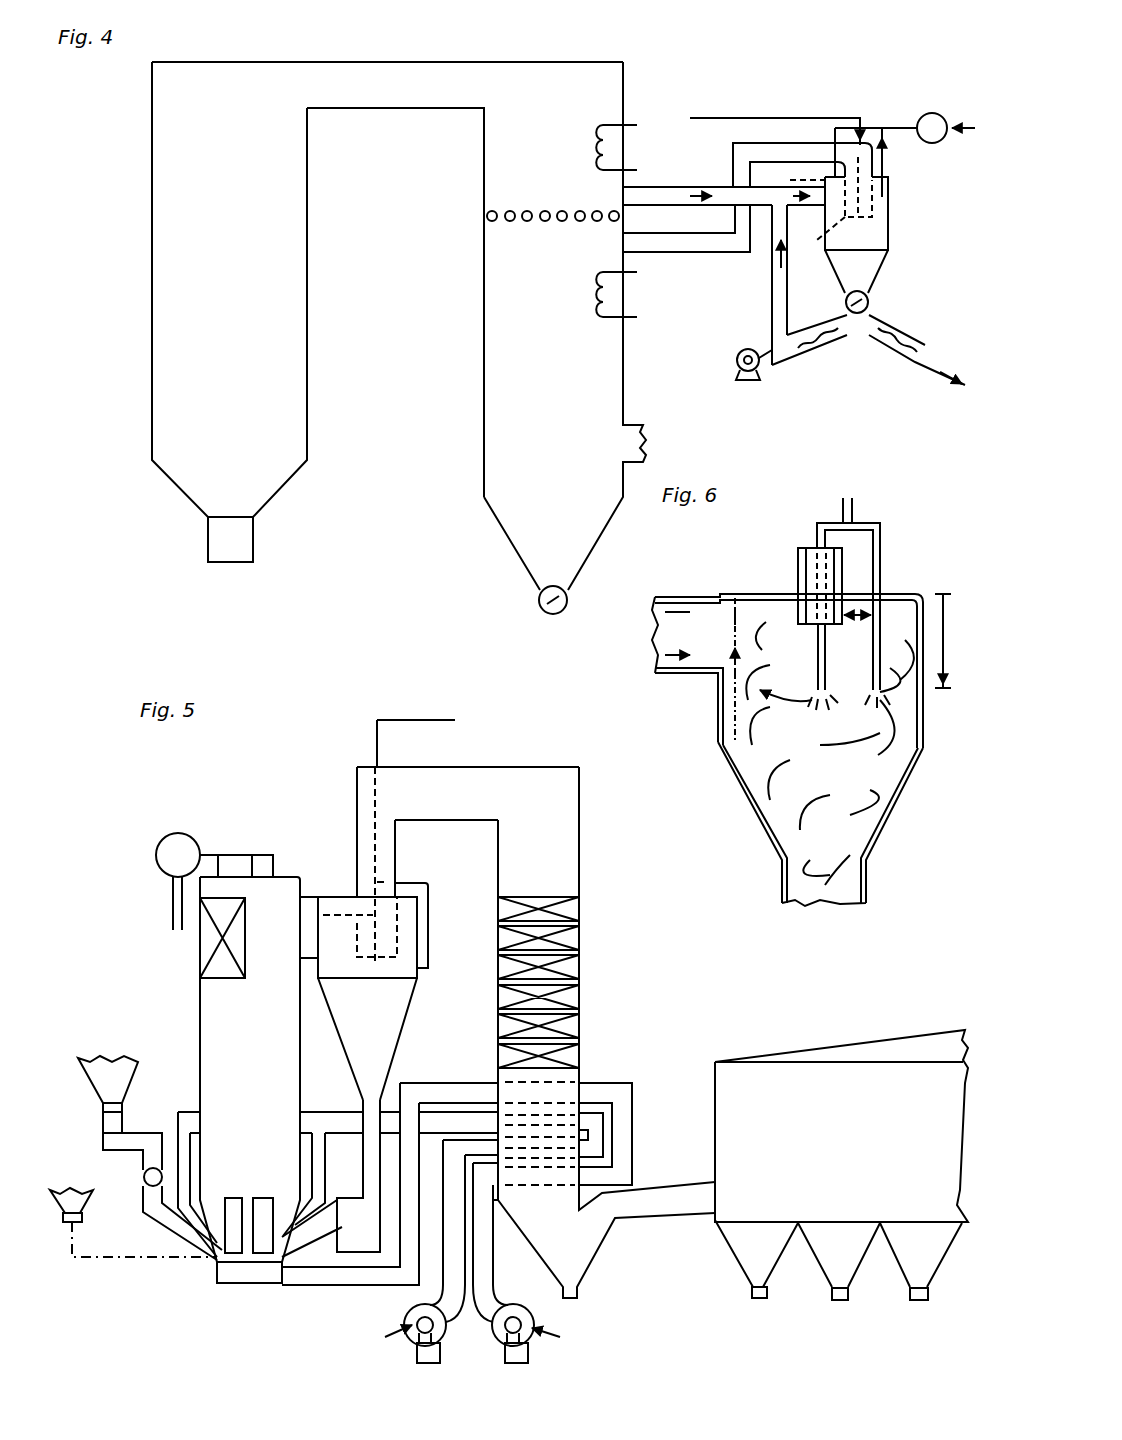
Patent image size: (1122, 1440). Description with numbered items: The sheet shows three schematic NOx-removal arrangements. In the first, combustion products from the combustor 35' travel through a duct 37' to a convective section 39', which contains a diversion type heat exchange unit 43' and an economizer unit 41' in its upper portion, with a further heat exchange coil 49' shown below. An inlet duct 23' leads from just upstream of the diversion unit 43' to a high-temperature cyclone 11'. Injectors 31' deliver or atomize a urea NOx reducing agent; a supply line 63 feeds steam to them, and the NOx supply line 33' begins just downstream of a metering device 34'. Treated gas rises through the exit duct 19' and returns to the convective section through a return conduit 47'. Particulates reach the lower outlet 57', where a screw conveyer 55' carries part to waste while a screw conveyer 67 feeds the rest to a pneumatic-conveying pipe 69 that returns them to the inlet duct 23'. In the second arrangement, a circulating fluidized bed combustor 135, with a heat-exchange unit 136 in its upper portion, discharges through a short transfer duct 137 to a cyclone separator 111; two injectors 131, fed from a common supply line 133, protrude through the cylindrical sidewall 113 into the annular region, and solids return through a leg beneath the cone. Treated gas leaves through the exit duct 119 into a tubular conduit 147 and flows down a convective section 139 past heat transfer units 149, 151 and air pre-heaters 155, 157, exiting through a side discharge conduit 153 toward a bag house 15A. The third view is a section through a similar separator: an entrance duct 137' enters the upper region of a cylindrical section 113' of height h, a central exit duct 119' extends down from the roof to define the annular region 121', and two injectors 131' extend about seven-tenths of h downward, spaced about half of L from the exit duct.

In FIG. 4, the combustor 35' is at (387, 312).
In FIG. 4, the duct 37' is at (395, 285).
In FIG. 4, the convective section 39' is at (515, 326).
In FIG. 4, the economizer unit 41' is at (588, 133).
In FIG. 4, the inlet duct 23' is at (675, 173).
In FIG. 4, the diversion type heat exchange unit 43' is at (553, 196).
In FIG. 4, the heat exchange coil 49' is at (582, 294).
In FIG. 4, the return conduit 47' is at (686, 246).
In FIG. 4, the pneumatic-conveying pipe 69 is at (771, 305).
In FIG. 4, the supply line 63 is at (836, 96).
In FIG. 4, the NOx supply line 33' is at (876, 138).
In FIG. 4, the metering device 34' is at (936, 95).
In FIG. 4, the injectors 31' is at (841, 168).
In FIG. 4, the high-temperature cyclone 11' is at (888, 235).
In FIG. 4, the exit duct 19' is at (831, 198).
In FIG. 4, the lower outlet 57' is at (699, 444).
In FIG. 4, the screw conveyer 67 is at (817, 346).
In FIG. 4, the screw conveyer 55' is at (917, 367).
In FIG. 5, the common supply line 133 is at (440, 720).
In FIG. 5, the tubular conduit 147 is at (472, 754).
In FIG. 5, the convective section 139 is at (581, 840).
In FIG. 5, the transfer duct 137 is at (293, 887).
In FIG. 5, the exit duct 119 is at (416, 866).
In FIG. 5, the injectors 131 is at (364, 894).
In FIG. 5, the heat-exchange unit 136 is at (215, 950).
In FIG. 5, the cyclone separator 111 is at (423, 979).
In FIG. 5, the cylindrical sidewall 113 is at (331, 1119).
In FIG. 5, the combustor 135 is at (255, 1070).
In FIG. 5, the heat transfer unit 149 is at (580, 962).
In FIG. 5, the heat transfer unit 151 is at (580, 1046).
In FIG. 5, the air pre-heater 155 is at (555, 1093).
In FIG. 5, the air pre-heater 157 is at (572, 1122).
In FIG. 5, the side discharge conduit 153 is at (670, 1202).
In FIG. 5, the baghouse filter 15A is at (840, 1142).
In FIG. 6, the entrance duct 137' is at (787, 642).
In FIG. 6, the central exit duct 119' is at (786, 617).
In FIG. 6, the injectors 131' is at (828, 602).
In FIG. 6, the tube 121' is at (911, 606).
In FIG. 6, the cylindrical section 113' is at (837, 733).